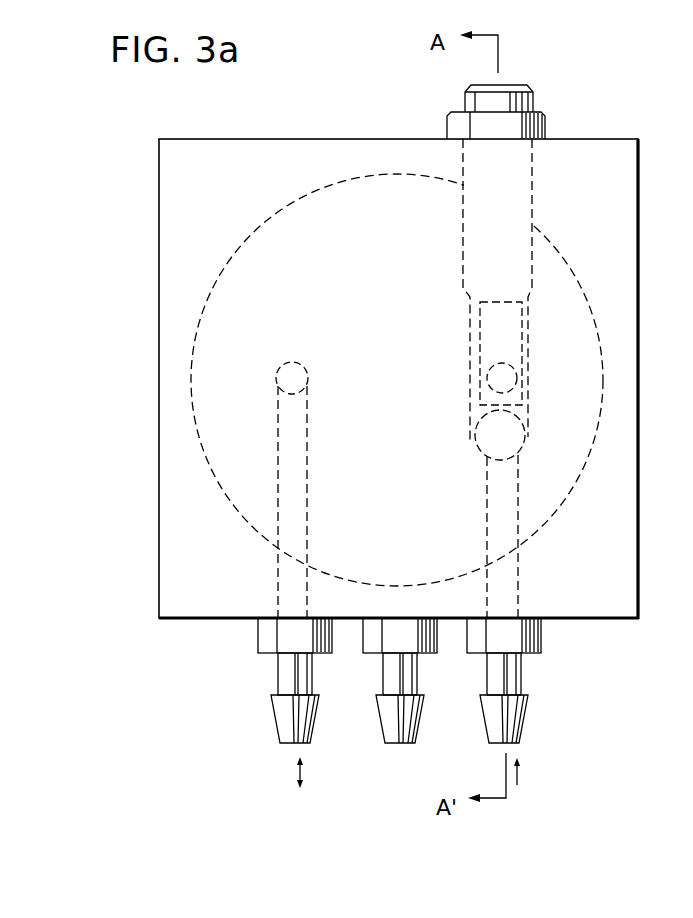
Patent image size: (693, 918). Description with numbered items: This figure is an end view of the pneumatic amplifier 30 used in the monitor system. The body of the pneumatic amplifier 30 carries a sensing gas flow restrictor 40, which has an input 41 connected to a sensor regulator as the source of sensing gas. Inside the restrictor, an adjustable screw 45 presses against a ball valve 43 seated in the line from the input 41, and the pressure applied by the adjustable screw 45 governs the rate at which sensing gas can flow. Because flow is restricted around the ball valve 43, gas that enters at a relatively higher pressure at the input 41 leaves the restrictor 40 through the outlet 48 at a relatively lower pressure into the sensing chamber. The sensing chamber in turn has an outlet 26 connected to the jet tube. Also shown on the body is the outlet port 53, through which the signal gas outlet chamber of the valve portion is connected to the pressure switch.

The pneumatic amplifier 30 is at (172, 669).
The sensing gas flow restrictor 40 is at (548, 71).
The adjustable screw 45 is at (520, 248).
The outlet 48 is at (507, 378).
The ball valve 43 is at (518, 440).
The outlet 26 is at (287, 712).
The outlet port 53 is at (397, 723).
The input 41 is at (522, 737).